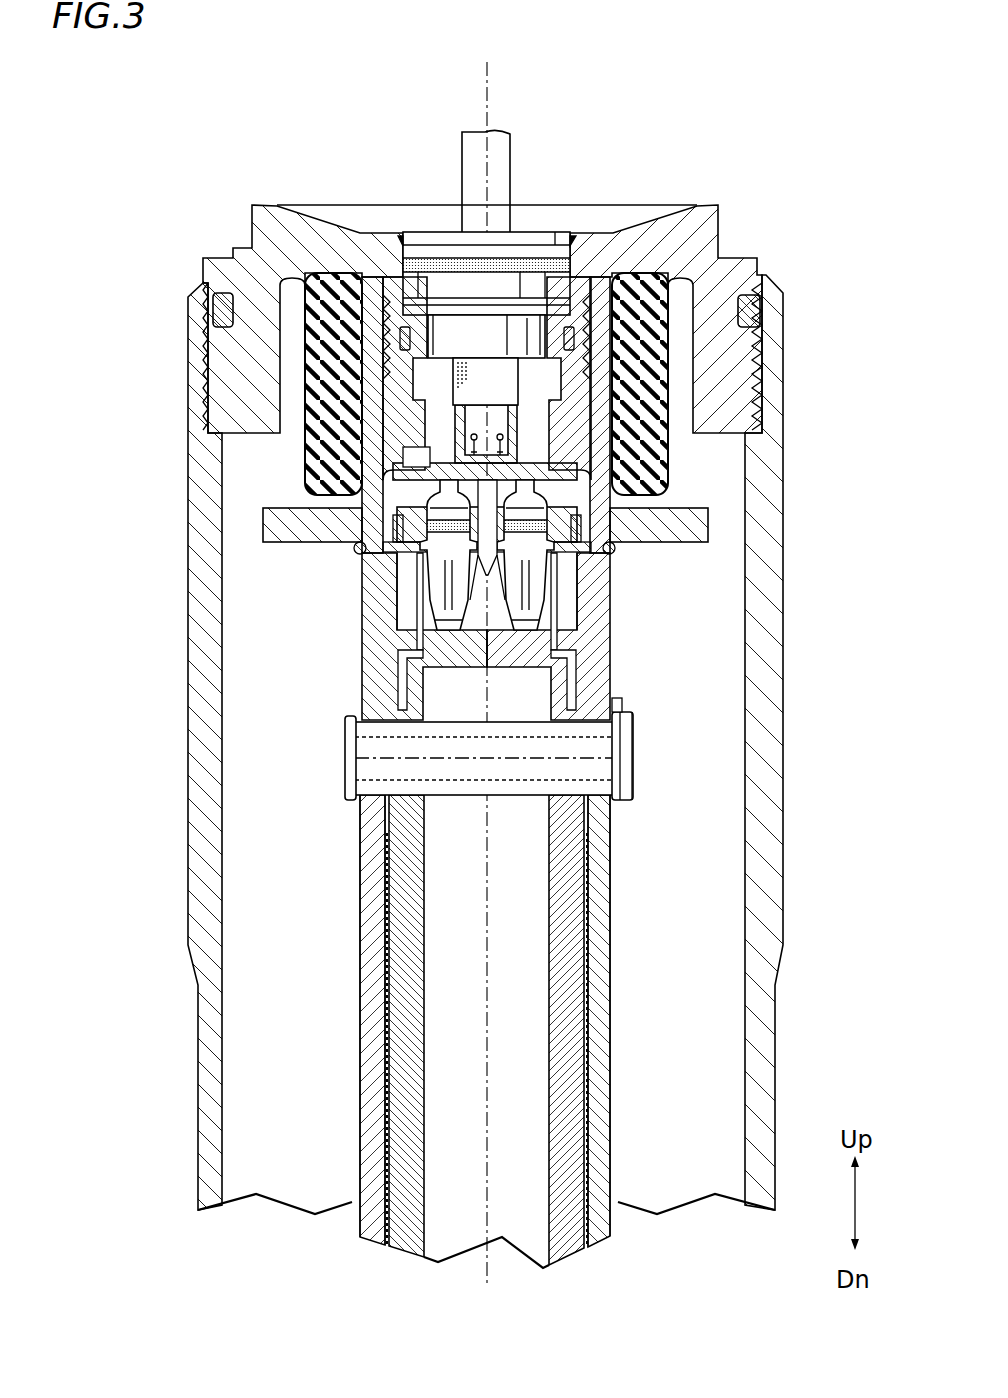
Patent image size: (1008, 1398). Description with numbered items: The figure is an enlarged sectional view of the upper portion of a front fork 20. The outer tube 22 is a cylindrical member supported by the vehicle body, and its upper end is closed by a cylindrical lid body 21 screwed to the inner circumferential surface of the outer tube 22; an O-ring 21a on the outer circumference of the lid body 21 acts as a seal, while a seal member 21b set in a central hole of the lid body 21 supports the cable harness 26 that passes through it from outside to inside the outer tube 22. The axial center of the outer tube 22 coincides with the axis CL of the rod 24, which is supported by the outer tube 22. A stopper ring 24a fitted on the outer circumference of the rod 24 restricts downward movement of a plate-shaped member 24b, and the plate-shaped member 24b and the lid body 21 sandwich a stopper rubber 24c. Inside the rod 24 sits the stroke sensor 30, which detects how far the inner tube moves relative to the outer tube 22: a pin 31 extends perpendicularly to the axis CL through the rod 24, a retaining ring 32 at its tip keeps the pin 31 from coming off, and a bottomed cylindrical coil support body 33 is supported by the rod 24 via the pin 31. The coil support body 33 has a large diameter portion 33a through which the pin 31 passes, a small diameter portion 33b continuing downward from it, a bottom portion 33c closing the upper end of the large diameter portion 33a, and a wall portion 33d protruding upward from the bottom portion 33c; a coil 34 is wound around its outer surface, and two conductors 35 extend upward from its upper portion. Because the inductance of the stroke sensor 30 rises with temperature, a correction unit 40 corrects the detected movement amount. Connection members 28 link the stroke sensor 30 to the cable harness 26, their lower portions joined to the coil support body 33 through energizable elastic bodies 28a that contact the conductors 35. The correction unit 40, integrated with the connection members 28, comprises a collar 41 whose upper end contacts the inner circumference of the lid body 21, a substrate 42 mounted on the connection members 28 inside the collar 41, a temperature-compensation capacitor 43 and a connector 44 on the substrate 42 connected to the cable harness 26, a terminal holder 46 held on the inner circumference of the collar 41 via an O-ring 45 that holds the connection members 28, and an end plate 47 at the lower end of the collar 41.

The front fork 20 is at (203, 162).
The lid body 21 is at (718, 206).
The O-ring 21a is at (748, 293).
The seal member 21b is at (545, 231).
The outer tube 22 is at (189, 1068).
The rod 24 is at (360, 1160).
The stopper ring 24a is at (616, 551).
The plate-shaped member 24b is at (710, 526).
The stopper rubber 24c is at (668, 402).
The cable harness 26 is at (511, 161).
The connection member 28 is at (442, 590).
The elastic body 28a is at (420, 577).
The stroke sensor 30 is at (284, 632).
The pin 31 is at (346, 755).
The retaining ring 32 is at (630, 808).
The coil support body 33 is at (380, 700).
The large diameter portion 33a is at (593, 680).
The small diameter portion 33b is at (585, 1026).
The bottom portion 33c is at (583, 625).
The wall portion 33d is at (517, 592).
The coil 34 is at (385, 858).
The conductor 35 is at (402, 658).
The correction unit 40 is at (543, 437).
The collar 41 is at (400, 352).
The substrate 42 is at (410, 493).
The capacitor 43 is at (415, 447).
The connector 44 is at (453, 410).
The O-ring 45 is at (595, 532).
The terminal holder 46 is at (578, 530).
The end plate 47 is at (565, 588).
The axis CL is at (489, 100).